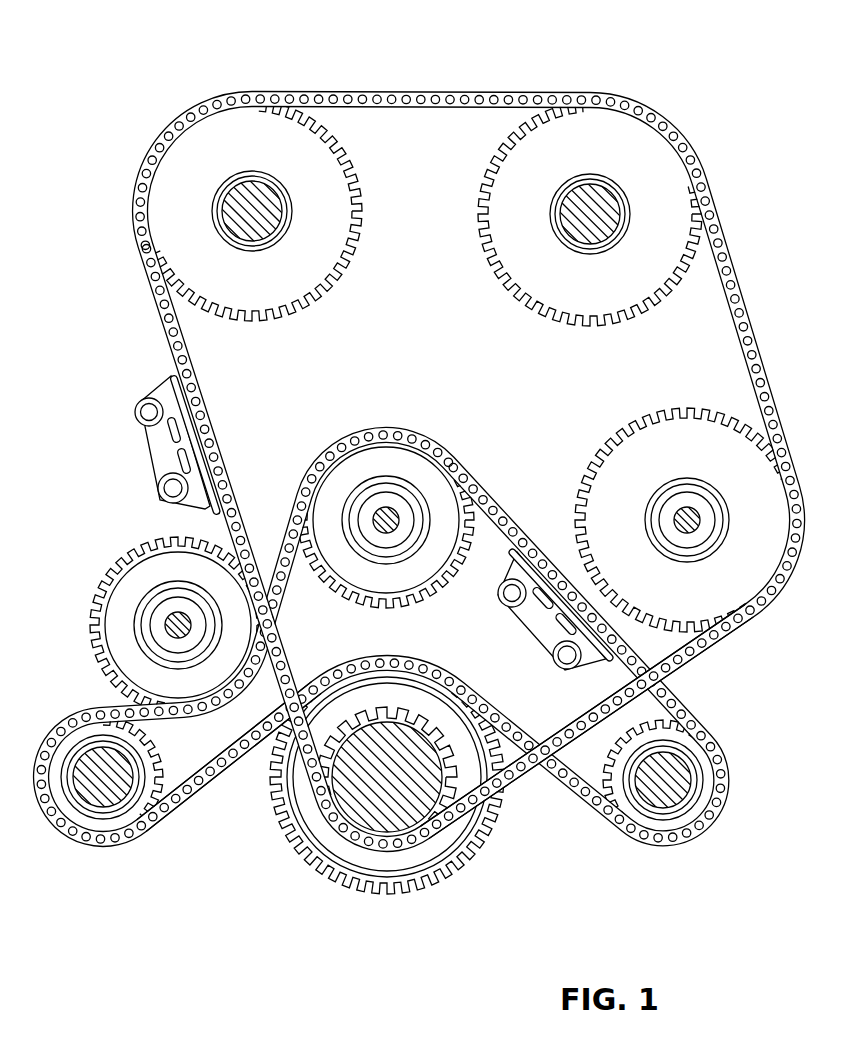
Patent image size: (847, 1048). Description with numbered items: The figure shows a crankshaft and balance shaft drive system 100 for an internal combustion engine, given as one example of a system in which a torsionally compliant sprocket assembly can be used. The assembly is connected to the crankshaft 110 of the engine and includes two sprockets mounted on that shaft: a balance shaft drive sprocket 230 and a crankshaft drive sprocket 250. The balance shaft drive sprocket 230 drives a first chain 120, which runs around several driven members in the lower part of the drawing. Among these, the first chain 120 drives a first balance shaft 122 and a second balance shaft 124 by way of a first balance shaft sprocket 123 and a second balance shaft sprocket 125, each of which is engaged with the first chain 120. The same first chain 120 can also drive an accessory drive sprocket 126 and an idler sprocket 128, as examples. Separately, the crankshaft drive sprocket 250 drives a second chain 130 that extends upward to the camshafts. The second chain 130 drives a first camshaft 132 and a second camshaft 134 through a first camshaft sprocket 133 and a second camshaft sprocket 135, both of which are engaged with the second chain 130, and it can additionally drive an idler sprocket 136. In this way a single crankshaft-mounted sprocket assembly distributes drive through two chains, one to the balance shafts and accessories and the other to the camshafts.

The crankshaft and balance shaft drive system 100 is at (72, 95).
The crankshaft 110 is at (387, 801).
The first chain 120 is at (381, 620).
The first balance shaft 122 is at (680, 761).
The first balance shaft sprocket 123 is at (671, 739).
The second balance shaft 124 is at (103, 784).
The second balance shaft sprocket 125 is at (229, 772).
The accessory drive sprocket 126 is at (172, 595).
The idler sprocket 128 is at (386, 552).
The second chain 130 is at (469, 441).
The first camshaft 132 is at (571, 213).
The first camshaft sprocket 133 is at (546, 214).
The second camshaft 134 is at (306, 191).
The second camshaft sprocket 135 is at (306, 211).
The idler sprocket 136 is at (676, 497).
The balance shaft drive sprocket 230 is at (587, 739).
The crankshaft drive sprocket 250 is at (386, 779).